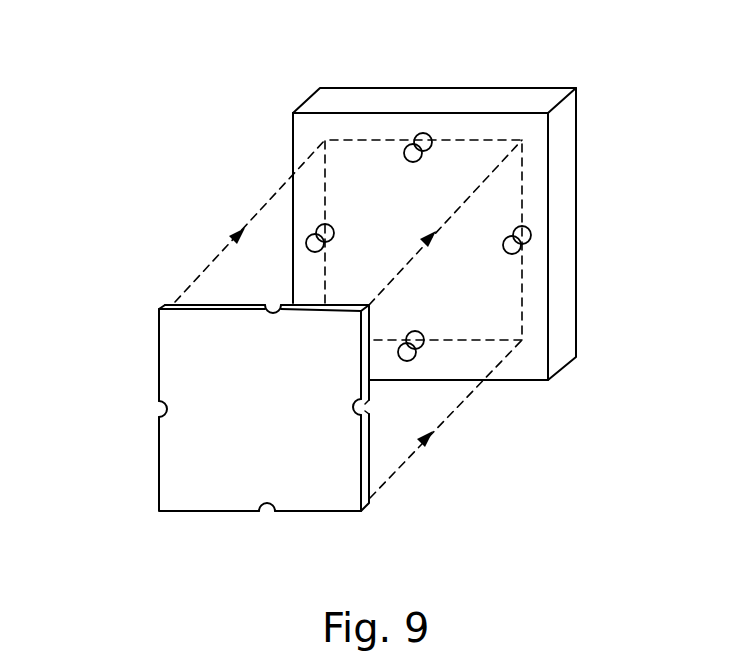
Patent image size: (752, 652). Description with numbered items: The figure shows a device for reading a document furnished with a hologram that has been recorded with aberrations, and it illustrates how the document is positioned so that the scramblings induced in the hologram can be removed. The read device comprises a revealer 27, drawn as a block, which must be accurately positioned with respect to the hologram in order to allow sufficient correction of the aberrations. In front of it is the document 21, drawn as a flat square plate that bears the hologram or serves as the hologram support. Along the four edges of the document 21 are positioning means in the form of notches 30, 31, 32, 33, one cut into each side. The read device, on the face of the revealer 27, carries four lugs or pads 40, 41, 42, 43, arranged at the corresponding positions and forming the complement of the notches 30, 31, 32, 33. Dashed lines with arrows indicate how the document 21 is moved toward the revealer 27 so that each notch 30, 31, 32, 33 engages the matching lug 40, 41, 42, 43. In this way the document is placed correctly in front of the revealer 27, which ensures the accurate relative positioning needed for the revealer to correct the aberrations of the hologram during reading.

The document 21 is at (177, 485).
The revealer 27 is at (567, 160).
The notch 30 is at (267, 509).
The notch 31 is at (158, 407).
The notch 32 is at (275, 300).
The notch 33 is at (367, 407).
The lug 40 is at (423, 351).
The lug 41 is at (312, 226).
The lug 42 is at (418, 137).
The lug 43 is at (528, 242).